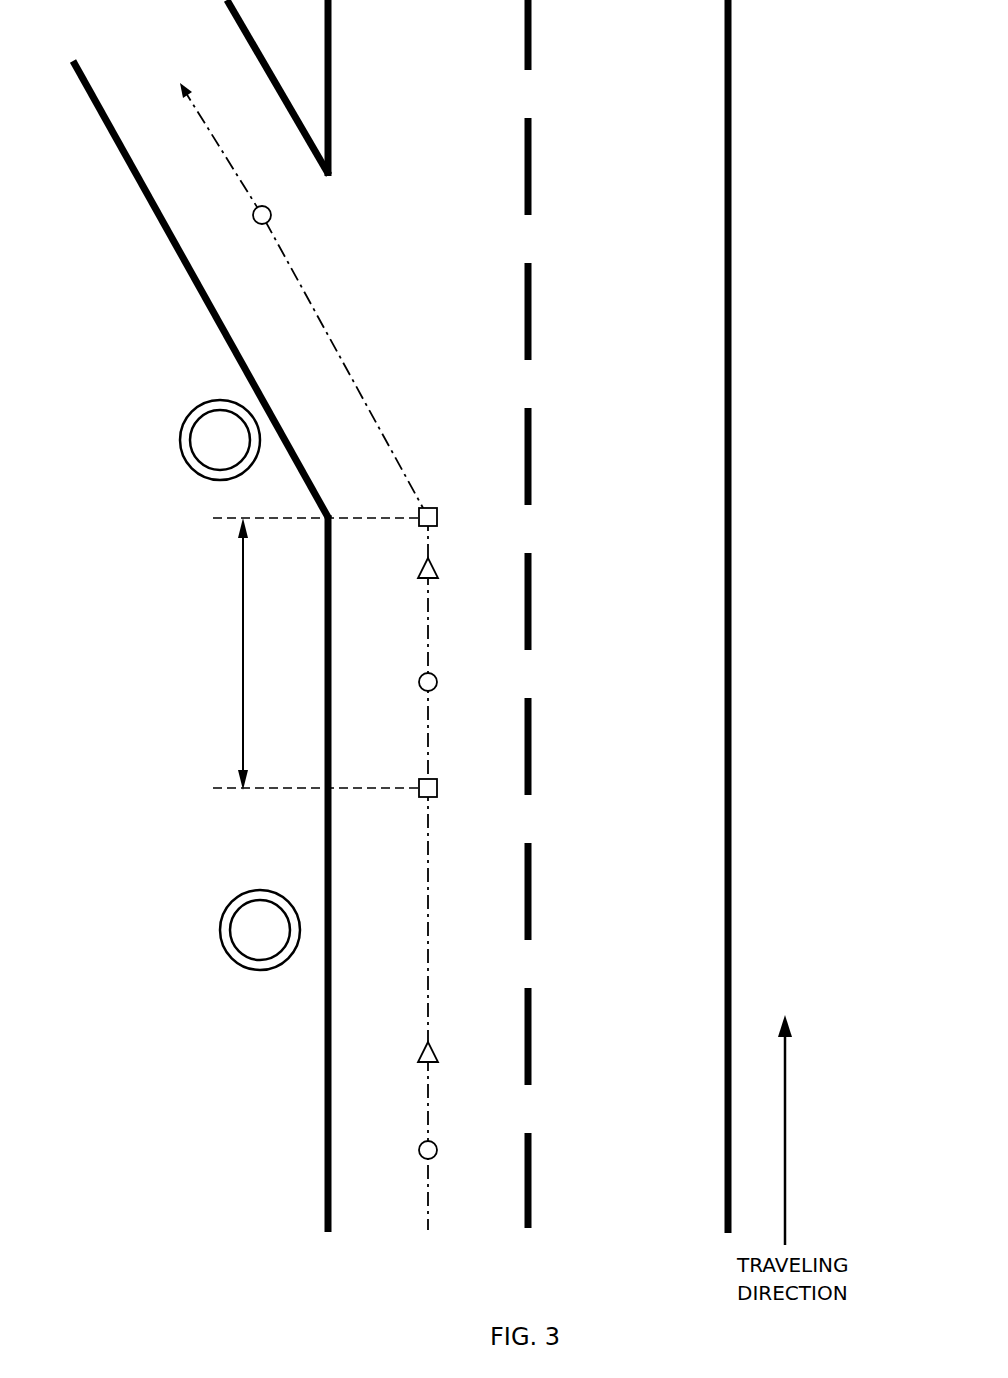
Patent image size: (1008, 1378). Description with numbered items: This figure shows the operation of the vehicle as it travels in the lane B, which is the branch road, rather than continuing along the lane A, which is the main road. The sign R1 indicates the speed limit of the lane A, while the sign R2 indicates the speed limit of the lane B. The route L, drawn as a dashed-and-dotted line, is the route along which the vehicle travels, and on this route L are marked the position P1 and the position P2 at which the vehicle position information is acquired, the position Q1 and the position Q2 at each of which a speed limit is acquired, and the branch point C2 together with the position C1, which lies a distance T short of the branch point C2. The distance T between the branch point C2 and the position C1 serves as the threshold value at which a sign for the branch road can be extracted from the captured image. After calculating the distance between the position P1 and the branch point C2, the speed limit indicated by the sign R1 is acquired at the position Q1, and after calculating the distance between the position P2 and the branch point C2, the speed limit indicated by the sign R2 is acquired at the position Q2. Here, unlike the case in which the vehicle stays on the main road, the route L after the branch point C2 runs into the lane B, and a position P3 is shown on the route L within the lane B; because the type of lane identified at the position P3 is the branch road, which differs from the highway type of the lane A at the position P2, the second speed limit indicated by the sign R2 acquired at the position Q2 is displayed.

The lane A is at (528, 616).
The lane B is at (201, 259).
The route L is at (433, 872).
The distance T is at (319, 654).
The sign R1 is at (231, 902).
The sign R2 is at (198, 408).
The position P1 is at (451, 1144).
The position P2 is at (451, 676).
The position P3 is at (284, 206).
The position Q1 is at (451, 1046).
The position Q2 is at (451, 564).
The position C1 is at (436, 778).
The branch point C2 is at (436, 508).